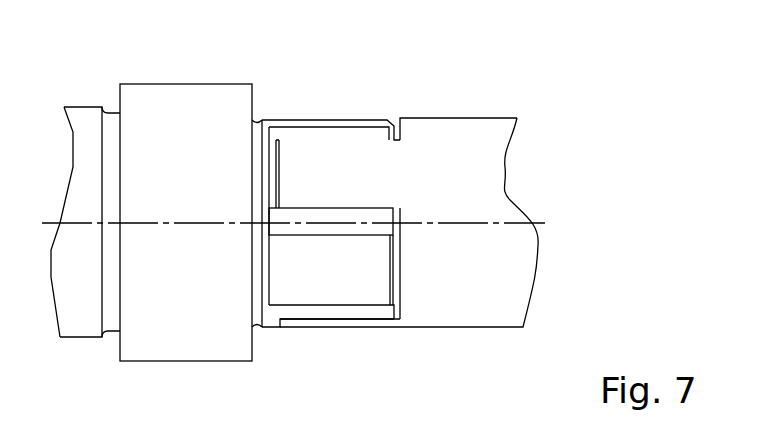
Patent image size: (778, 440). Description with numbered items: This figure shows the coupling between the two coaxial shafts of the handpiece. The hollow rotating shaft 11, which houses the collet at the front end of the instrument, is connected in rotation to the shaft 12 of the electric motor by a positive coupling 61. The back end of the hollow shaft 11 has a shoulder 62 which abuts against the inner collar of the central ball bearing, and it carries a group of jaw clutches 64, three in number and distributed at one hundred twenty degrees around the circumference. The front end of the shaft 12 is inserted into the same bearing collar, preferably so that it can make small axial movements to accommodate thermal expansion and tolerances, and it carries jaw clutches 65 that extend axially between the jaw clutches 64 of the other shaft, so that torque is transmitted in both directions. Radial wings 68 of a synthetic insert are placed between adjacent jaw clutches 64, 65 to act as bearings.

The hollow rotating shaft 11 is at (186, 113).
The shaft of electric motor 12 is at (472, 138).
The positive coupling 61 is at (308, 95).
The shoulder 62 is at (253, 105).
The jaw clutches 64 is at (331, 118).
The jaw clutches 65 is at (357, 172).
The radial wings 68 is at (381, 224).